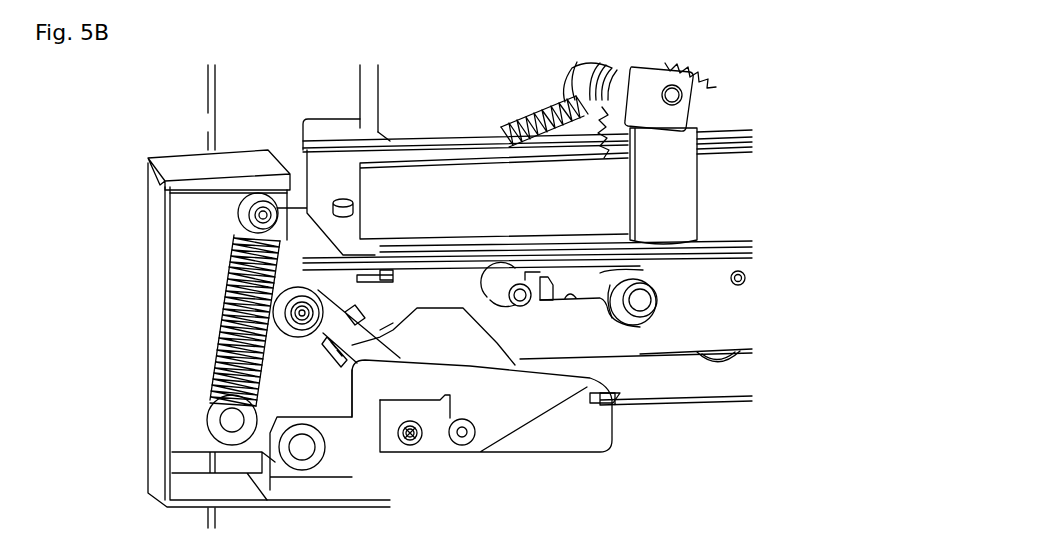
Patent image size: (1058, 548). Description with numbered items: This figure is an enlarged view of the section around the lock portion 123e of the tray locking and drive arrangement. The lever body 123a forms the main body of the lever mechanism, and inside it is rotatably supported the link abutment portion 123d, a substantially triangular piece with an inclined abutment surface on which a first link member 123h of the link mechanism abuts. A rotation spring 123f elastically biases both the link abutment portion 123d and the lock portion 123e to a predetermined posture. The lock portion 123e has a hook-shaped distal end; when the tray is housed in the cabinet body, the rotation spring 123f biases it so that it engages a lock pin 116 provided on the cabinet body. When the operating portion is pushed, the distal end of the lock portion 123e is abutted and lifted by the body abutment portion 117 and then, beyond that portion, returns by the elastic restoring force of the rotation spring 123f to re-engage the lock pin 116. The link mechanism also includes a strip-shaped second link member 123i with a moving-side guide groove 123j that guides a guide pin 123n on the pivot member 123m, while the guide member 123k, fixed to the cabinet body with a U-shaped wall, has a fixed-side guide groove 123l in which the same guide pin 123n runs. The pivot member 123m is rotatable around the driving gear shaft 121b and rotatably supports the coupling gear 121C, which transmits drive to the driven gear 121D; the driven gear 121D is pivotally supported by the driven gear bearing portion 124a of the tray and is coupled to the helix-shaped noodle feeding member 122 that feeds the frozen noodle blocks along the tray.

The noodle feeding member 122 is at (575, 62).
The coupling gear 121C is at (515, 100).
The driven gear 121D is at (737, 71).
The driven gear bearing portion 124a is at (698, 185).
The lever body 123a is at (135, 223).
The first link member 123h is at (358, 322).
The guide pin 123n is at (505, 283).
The pivot member 123m is at (537, 270).
The rotation spring 123f is at (228, 318).
The driving gear shaft 121b is at (645, 300).
The moving-side guide groove 123j is at (570, 300).
The fixed-side guide groove 123l is at (730, 365).
The link abutment portion 123d is at (287, 402).
The guide member 123k is at (647, 405).
The second link member 123i is at (680, 357).
The lock pin 116 is at (465, 445).
The body abutment portion 117 is at (427, 412).
The lock portion 123e is at (541, 431).